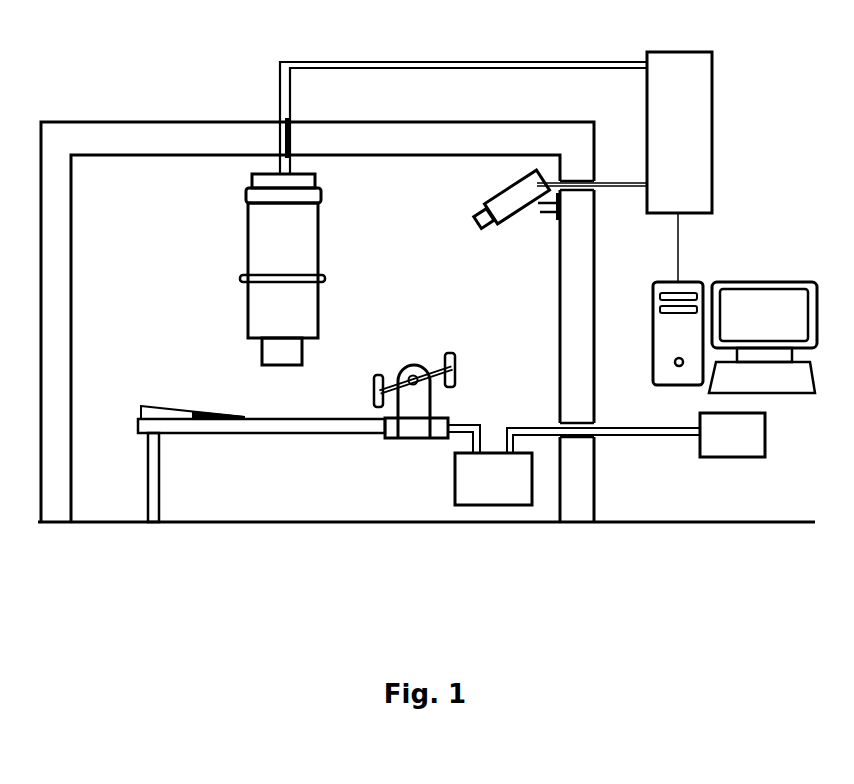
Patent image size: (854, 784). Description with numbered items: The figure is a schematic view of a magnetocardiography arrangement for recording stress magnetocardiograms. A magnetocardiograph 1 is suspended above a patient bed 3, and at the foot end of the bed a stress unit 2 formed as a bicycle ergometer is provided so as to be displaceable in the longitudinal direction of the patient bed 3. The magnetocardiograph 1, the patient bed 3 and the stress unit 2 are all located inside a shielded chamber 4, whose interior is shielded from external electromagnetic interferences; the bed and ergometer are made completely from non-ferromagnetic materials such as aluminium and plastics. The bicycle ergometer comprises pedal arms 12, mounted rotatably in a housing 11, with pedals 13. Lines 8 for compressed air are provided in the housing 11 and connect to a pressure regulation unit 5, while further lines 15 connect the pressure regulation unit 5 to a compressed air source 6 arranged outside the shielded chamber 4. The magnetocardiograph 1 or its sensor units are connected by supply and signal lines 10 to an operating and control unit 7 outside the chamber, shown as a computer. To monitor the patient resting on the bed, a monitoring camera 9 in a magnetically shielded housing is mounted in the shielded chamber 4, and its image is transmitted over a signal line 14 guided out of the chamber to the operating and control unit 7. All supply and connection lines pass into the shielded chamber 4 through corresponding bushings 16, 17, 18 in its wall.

The magnetocardiograph 1 is at (258, 257).
The stress unit 2 is at (440, 367).
The patient bed 3 is at (268, 427).
The shielded chamber 4 is at (190, 140).
The pressure regulation unit 5 is at (497, 488).
The compressed air source 6 is at (732, 435).
The operating and control unit 7 is at (750, 260).
The lines for compressed air 8 is at (478, 422).
The monitoring camera 9 is at (500, 198).
The supply and signal lines 10 is at (427, 62).
The housing 11 is at (430, 403).
The pedal arms 12 is at (440, 372).
The pedals 13 is at (453, 362).
The signal line 14 is at (627, 189).
The further lines 15 is at (632, 432).
The bushing 16 is at (594, 182).
The bushing 17 is at (598, 426).
The bushing 18 is at (290, 125).